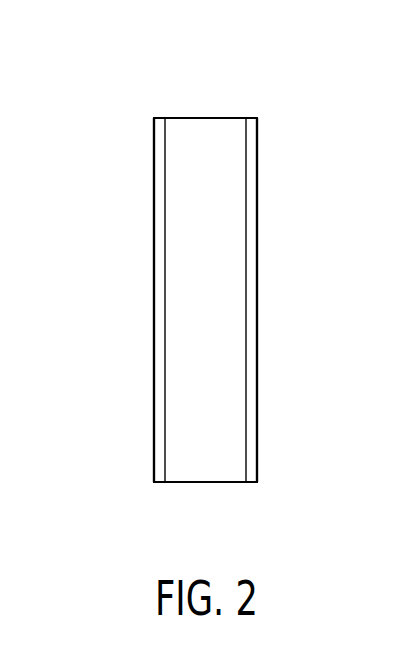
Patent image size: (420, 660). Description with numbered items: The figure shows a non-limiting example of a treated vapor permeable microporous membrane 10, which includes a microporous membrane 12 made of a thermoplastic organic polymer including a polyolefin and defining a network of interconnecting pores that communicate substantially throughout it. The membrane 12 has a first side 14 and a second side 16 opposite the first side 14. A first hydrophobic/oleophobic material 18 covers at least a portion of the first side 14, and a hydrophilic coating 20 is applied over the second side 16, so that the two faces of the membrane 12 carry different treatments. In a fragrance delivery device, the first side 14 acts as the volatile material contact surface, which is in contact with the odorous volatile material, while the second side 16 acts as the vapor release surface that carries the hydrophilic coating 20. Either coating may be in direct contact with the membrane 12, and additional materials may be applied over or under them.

The treated vapor permeable microporous membrane 10 is at (322, 108).
The microporous membrane 12 is at (205, 482).
The first side 14 is at (245, 229).
The second side 16 is at (164, 258).
The first hydrophobic/oleophobic material 18 is at (257, 340).
The hydrophilic coating 20 is at (154, 373).